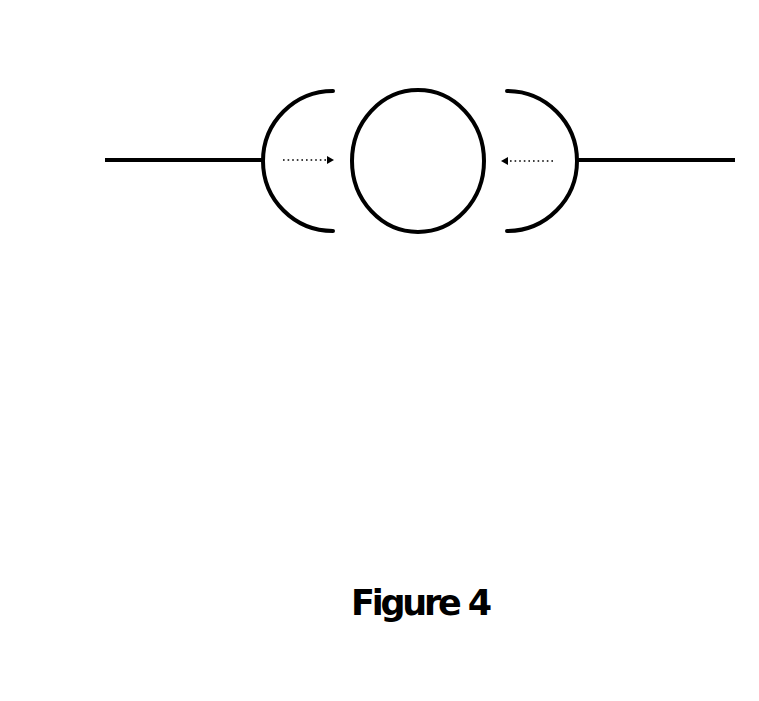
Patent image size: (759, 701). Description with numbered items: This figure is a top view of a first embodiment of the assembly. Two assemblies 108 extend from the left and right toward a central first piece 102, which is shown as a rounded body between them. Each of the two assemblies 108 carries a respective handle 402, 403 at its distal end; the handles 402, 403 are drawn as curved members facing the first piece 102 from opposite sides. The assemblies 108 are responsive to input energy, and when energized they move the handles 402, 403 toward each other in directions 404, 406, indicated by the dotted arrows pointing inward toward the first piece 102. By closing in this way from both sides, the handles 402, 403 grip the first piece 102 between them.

The first piece 102 is at (418, 161).
The assembly 108 is at (180, 158).
The handle 402 is at (283, 214).
The handle 403 is at (519, 234).
The direction 404 is at (308, 151).
The direction 406 is at (527, 152).